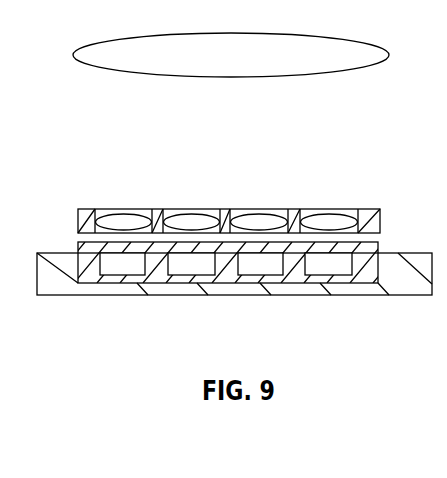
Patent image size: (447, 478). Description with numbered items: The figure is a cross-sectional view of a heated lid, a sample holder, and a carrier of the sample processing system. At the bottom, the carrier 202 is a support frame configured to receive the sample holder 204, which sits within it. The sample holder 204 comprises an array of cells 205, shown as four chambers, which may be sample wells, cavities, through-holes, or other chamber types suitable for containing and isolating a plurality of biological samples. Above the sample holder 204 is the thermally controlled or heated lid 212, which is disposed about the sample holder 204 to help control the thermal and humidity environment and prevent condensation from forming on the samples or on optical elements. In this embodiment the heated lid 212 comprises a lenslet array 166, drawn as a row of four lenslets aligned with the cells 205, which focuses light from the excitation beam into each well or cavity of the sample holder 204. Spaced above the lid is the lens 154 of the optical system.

The lens 154 is at (295, 33).
The lenslet array 166 is at (372, 211).
The heated lid 212 is at (91, 203).
The carrier 202 is at (248, 296).
The sample holder 204 is at (98, 283).
The cells 205 is at (177, 268).